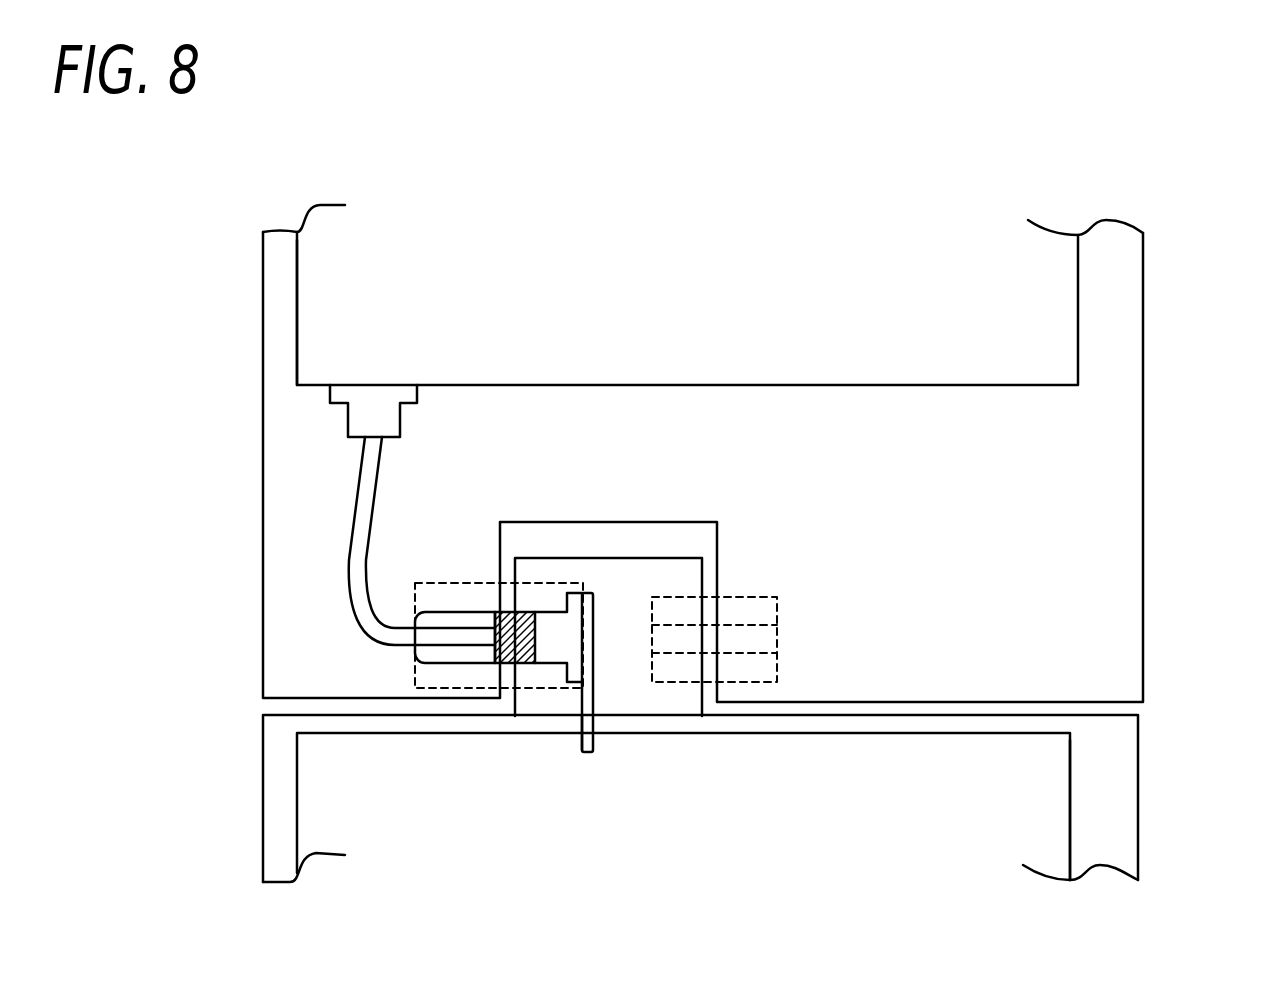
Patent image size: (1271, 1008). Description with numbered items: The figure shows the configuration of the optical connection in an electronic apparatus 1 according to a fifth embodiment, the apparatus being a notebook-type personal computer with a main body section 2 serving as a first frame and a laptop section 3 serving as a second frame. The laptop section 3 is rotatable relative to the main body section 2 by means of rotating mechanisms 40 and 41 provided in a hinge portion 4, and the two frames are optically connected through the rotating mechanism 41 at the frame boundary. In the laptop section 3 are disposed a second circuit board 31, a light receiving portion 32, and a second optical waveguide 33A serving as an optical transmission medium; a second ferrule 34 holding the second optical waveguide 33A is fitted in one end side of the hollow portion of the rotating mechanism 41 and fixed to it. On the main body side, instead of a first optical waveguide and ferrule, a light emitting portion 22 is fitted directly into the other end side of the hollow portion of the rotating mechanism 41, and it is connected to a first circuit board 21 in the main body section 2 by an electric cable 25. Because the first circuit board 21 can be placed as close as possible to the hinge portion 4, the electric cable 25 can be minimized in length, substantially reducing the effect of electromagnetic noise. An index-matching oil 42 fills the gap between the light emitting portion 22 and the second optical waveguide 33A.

The electronic apparatus 1 is at (1150, 197).
The main body section 2 is at (1120, 743).
The laptop section 3 is at (1118, 388).
The hinge portion 4 is at (667, 585).
The first circuit board 21 is at (1043, 796).
The light emitting portion 22 is at (570, 620).
The electric cable 25 is at (593, 723).
The second circuit board 31 is at (297, 325).
The light receiving portion 32 is at (348, 420).
The second optical waveguide 33A is at (362, 497).
The second ferrule 34 is at (448, 618).
The rotating mechanism 40 is at (777, 607).
The rotating mechanism 41 is at (415, 677).
The index-matching oil 42 is at (503, 665).